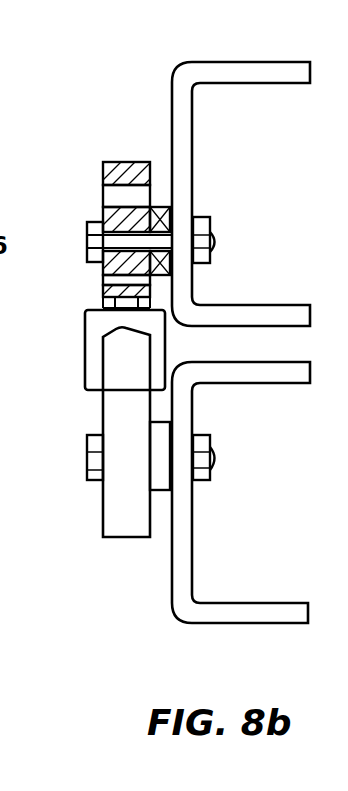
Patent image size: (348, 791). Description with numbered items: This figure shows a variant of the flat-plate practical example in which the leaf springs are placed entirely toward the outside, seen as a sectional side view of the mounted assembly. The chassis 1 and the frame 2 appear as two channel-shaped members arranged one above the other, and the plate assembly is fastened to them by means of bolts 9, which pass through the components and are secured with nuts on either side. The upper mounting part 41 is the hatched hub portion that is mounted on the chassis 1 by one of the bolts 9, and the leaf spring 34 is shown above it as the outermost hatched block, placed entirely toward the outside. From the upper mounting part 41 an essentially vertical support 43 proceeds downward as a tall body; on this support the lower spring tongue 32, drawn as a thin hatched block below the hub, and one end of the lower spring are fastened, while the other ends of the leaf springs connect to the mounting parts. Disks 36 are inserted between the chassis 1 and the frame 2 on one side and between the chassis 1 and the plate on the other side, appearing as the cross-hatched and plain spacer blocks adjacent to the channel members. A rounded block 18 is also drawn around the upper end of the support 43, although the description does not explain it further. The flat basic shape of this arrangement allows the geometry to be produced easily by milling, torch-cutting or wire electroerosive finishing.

The chassis 1 is at (188, 610).
The frame 2 is at (193, 75).
The bolts 9 is at (217, 241).
The bracket block 18 is at (95, 360).
The spring tongue 32 is at (113, 295).
The leaf spring 34 is at (120, 168).
The disks 36 is at (163, 216).
The upper mounting part 41 is at (115, 222).
The essentially vertical support 43 is at (133, 407).